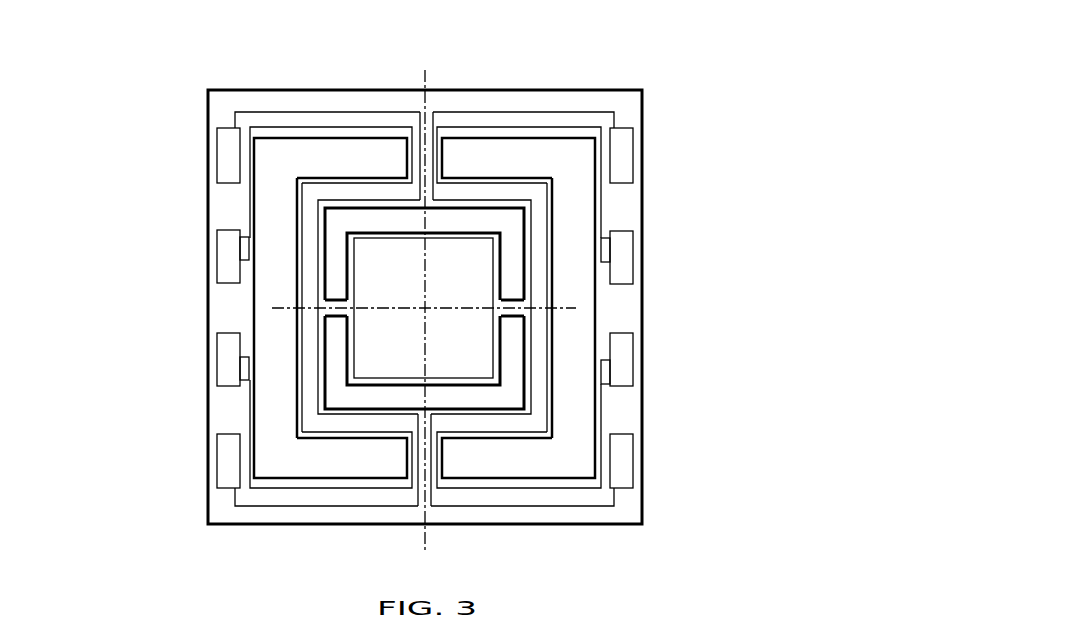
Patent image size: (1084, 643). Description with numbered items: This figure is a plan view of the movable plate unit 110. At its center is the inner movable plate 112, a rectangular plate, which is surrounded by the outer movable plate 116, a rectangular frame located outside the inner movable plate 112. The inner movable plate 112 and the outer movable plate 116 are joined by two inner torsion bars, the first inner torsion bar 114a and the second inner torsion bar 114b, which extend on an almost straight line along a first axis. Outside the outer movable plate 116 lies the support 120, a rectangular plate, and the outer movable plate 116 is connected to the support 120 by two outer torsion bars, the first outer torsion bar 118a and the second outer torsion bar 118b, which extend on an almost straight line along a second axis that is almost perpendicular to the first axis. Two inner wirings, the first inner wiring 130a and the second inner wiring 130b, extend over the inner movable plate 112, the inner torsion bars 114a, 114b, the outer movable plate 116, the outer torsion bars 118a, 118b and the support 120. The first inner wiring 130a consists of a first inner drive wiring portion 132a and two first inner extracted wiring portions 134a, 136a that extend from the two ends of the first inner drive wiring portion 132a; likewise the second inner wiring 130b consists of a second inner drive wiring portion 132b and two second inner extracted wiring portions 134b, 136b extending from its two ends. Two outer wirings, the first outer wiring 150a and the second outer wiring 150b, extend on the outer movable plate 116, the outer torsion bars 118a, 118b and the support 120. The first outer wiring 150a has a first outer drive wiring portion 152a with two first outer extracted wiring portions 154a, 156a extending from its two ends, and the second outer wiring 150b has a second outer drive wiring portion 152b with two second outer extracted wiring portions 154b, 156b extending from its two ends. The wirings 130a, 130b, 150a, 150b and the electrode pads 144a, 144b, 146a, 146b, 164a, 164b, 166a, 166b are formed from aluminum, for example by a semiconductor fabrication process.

The movable plate unit 110 is at (176, 64).
The inner movable plate 112 is at (377, 248).
The first inner torsion bar 114a is at (342, 318).
The second inner torsion bar 114b is at (510, 302).
The outer movable plate 116 is at (540, 335).
The first outer torsion bar 118a is at (410, 155).
The second outer torsion bar 118b is at (440, 463).
The support 120 is at (259, 100).
The first inner wiring 130a is at (456, 160).
The second inner wiring 130b is at (506, 398).
The first inner drive wiring portion 132a is at (440, 237).
The second inner drive wiring portion 132b is at (460, 387).
The first inner extracted wiring portion 134a is at (390, 200).
The second inner extracted wiring portion 134b is at (440, 443).
The first inner extracted wiring portion 136a is at (500, 200).
The second inner extracted wiring portion 136b is at (482, 417).
The electrode pad 144a is at (223, 152).
The electrode pad 144b is at (217, 470).
The electrode pad 146a is at (633, 152).
The electrode pad 146b is at (633, 487).
The first outer wiring 150a is at (187, 308).
The second outer wiring 150b is at (677, 308).
The first outer drive wiring portion 152a is at (298, 285).
The second outer drive wiring portion 152b is at (553, 290).
The first outer extracted wiring portion 154a is at (248, 238).
The second outer extracted wiring portion 154b is at (601, 242).
The first outer extracted wiring portion 156a is at (248, 383).
The second outer extracted wiring portion 156b is at (674, 359).
The electrode pad 164a is at (222, 238).
The electrode pad 164b is at (627, 242).
The electrode pad 166a is at (219, 380).
The electrode pad 166b is at (630, 377).